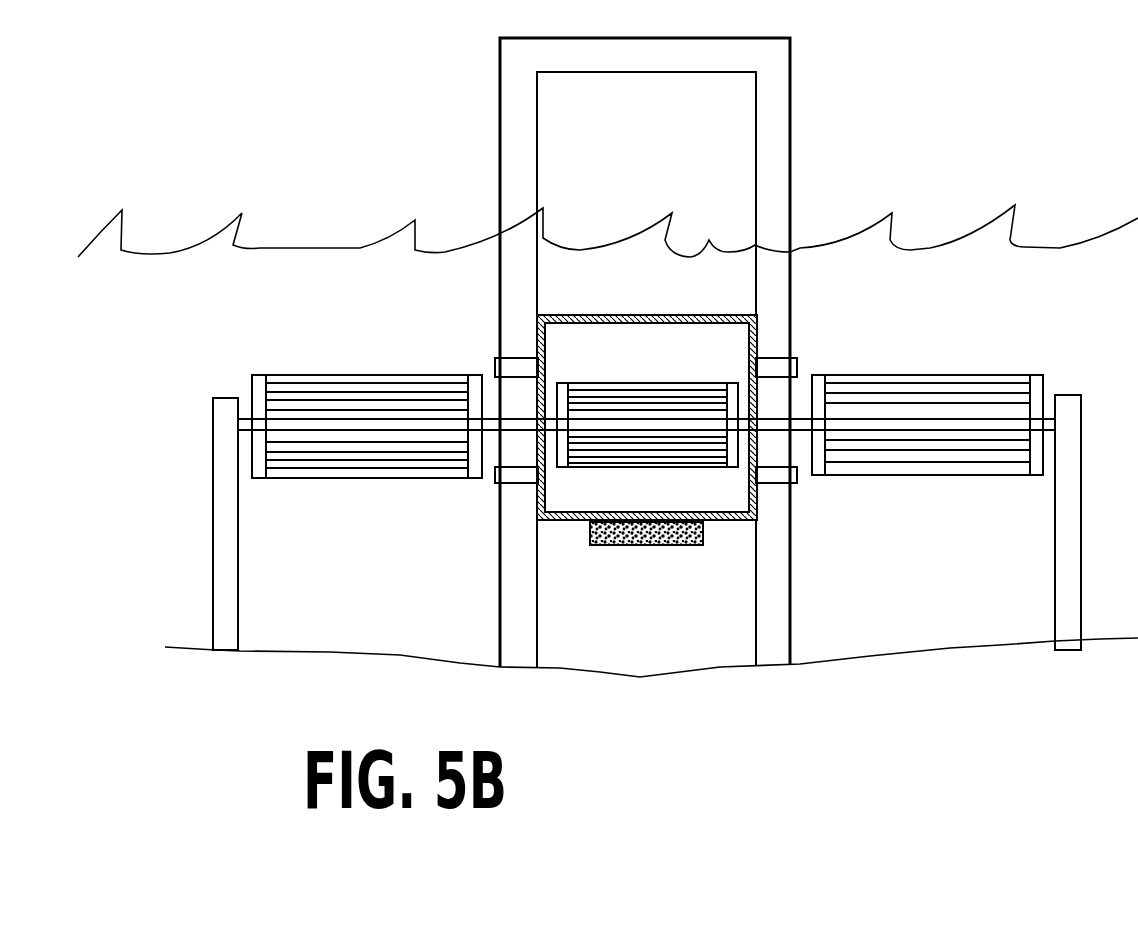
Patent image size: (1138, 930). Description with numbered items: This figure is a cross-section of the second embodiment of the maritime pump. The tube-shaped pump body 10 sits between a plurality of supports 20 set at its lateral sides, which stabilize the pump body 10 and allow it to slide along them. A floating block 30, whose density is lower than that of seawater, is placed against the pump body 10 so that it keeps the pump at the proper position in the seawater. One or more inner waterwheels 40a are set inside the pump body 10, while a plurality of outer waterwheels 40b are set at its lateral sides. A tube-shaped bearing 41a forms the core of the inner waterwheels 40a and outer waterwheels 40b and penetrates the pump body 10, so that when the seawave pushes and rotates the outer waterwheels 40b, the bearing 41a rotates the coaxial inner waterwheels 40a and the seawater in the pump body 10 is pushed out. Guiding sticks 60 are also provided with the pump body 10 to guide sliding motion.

The pump body 10 is at (571, 522).
The supports 20 is at (550, 59).
The floating block 30 is at (643, 524).
The inner waterwheels 40a is at (624, 390).
The outer waterwheels 40b is at (930, 407).
The bearing 41a is at (496, 430).
The guiding sticks 60 is at (230, 432).